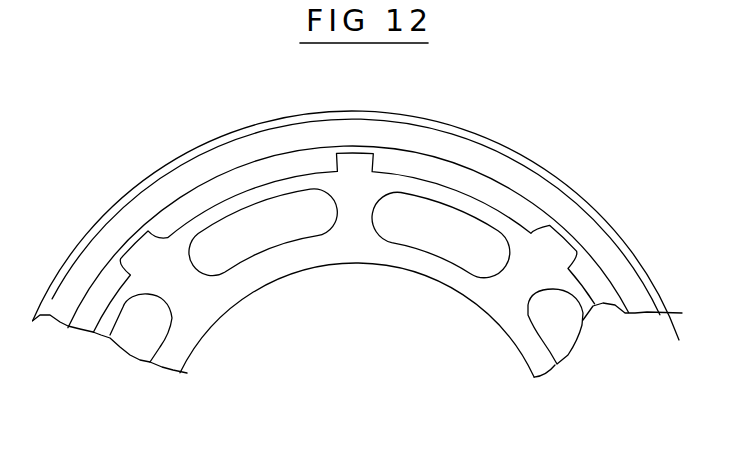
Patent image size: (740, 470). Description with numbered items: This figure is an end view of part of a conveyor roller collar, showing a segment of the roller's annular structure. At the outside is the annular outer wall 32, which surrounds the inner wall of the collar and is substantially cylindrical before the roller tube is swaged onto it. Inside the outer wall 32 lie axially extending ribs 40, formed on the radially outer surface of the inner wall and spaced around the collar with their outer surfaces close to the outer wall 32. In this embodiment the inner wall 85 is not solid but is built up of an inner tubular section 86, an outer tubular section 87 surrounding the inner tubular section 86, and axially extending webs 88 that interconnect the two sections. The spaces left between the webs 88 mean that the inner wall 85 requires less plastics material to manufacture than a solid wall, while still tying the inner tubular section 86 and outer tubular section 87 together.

The axially extending ribs 40 is at (378, 147).
The annular outer wall 32 is at (427, 190).
The outer tubular section 87 is at (574, 117).
The axially extending webs 88 is at (355, 212).
The inner wall 85 is at (258, 290).
The inner tubular section 86 is at (437, 272).